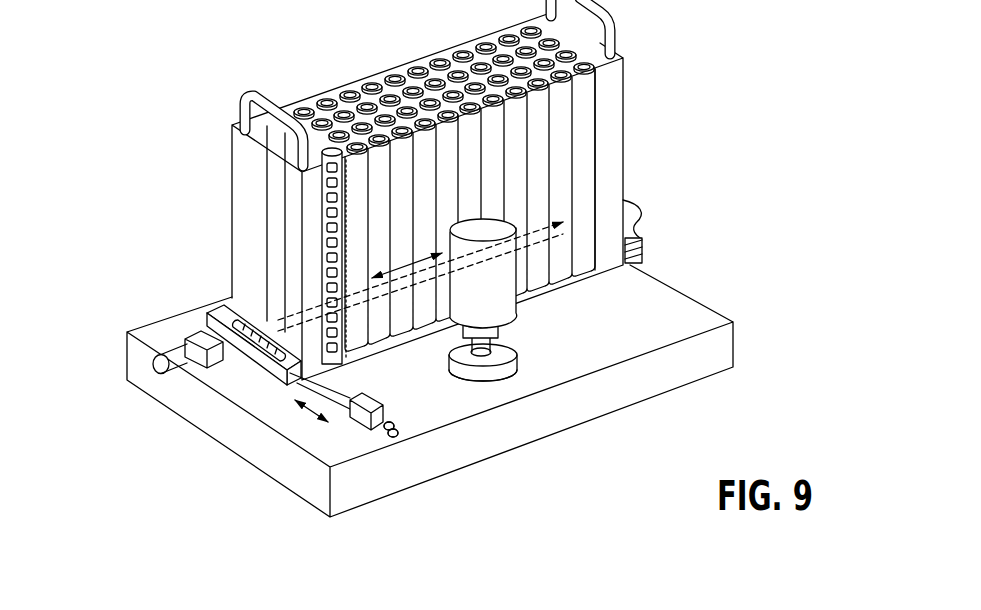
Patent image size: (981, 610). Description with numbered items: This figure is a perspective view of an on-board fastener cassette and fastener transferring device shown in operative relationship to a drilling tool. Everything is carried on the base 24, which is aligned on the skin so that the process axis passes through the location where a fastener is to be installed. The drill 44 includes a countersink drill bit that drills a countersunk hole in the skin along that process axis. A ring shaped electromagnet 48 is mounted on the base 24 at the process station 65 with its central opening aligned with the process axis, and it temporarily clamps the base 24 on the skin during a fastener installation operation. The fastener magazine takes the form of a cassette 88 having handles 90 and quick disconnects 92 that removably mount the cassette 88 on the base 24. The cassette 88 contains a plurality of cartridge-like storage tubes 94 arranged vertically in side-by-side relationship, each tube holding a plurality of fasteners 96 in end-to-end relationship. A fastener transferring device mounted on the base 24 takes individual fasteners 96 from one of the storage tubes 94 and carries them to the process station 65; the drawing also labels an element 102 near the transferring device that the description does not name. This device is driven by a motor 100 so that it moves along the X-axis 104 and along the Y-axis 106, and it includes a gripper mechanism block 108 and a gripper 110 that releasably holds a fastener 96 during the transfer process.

The base 24 is at (138, 348).
The drill 44 is at (512, 316).
The ring shaped electromagnet 48 is at (524, 380).
The process station 65 is at (488, 389).
The cassette 88 is at (627, 88).
The handles 90 is at (624, 32).
The quick disconnects 92 is at (644, 242).
The storage tubes 94 is at (596, 177).
The fasteners 96 is at (318, 181).
The motor 100 is at (150, 365).
The slot block 102 is at (212, 309).
The X-axis 104 is at (405, 266).
The Y-axis 106 is at (310, 418).
The gripper mechanism block 108 is at (348, 424).
The gripper 110 is at (390, 449).